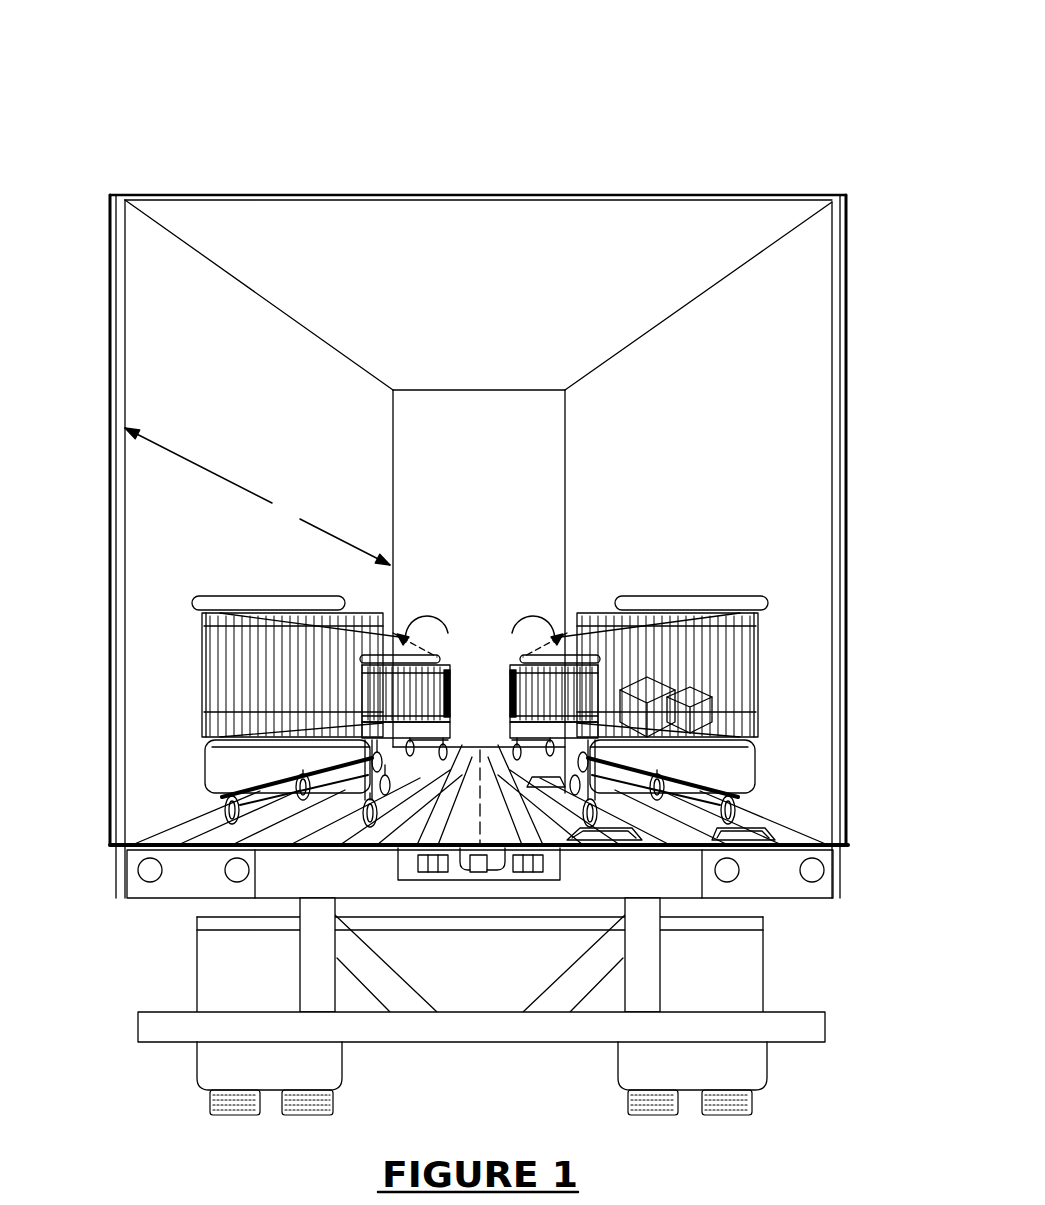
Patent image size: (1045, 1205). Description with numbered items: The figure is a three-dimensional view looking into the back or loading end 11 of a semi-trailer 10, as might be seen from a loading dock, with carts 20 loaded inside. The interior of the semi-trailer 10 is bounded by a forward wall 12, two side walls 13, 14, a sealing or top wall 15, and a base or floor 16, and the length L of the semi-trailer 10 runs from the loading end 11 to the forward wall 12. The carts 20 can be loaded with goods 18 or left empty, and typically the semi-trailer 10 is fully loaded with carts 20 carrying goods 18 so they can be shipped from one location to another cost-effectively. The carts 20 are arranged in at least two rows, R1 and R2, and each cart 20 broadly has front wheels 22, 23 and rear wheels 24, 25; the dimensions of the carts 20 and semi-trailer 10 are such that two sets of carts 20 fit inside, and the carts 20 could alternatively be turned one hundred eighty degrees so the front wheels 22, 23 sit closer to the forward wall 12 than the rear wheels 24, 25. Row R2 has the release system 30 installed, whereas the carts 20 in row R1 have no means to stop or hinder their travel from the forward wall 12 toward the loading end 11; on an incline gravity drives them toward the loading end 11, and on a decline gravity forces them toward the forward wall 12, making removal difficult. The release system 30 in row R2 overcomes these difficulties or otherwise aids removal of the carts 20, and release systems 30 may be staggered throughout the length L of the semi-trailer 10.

The semi-trailer 10 is at (480, 565).
The loading end 11 is at (550, 197).
The forward wall 12 is at (466, 473).
The side wall 13 is at (143, 388).
The side wall 14 is at (805, 447).
The top wall 15 is at (475, 217).
The floor 16 is at (494, 828).
The goods 18 is at (647, 677).
The cart 20 is at (202, 672).
The front wheel 22 is at (377, 813).
The front wheel 23 is at (228, 806).
The rear wheel 24 is at (390, 784).
The rear wheel 25 is at (317, 773).
The release system 30 is at (632, 775).
The row R1 is at (433, 638).
The row R2 is at (523, 638).
The length L is at (257, 496).